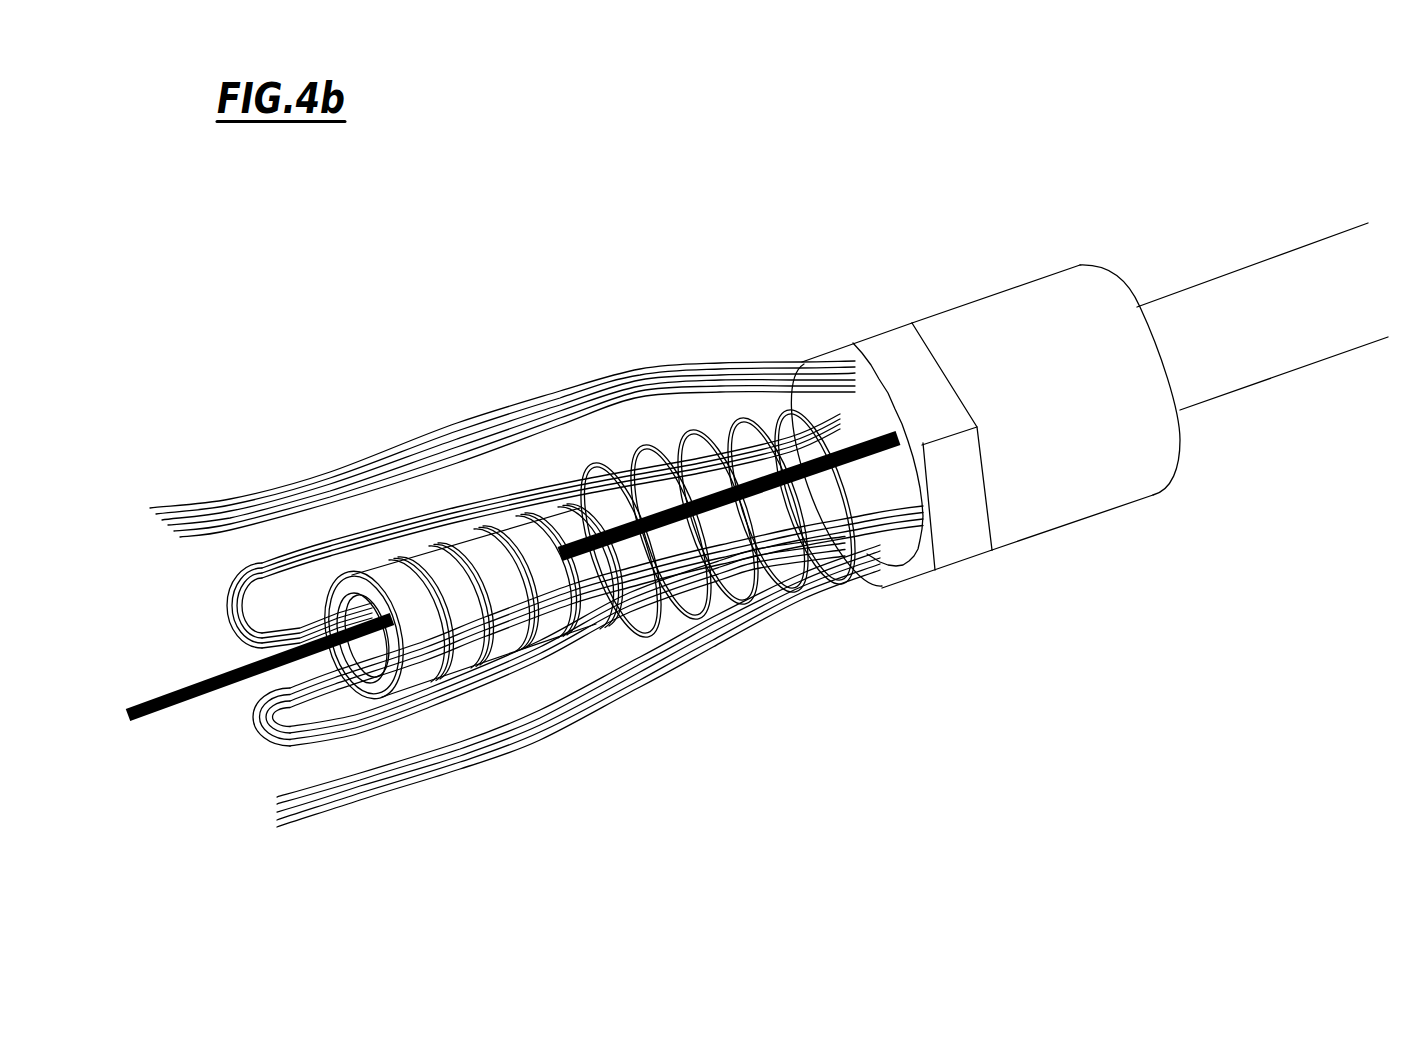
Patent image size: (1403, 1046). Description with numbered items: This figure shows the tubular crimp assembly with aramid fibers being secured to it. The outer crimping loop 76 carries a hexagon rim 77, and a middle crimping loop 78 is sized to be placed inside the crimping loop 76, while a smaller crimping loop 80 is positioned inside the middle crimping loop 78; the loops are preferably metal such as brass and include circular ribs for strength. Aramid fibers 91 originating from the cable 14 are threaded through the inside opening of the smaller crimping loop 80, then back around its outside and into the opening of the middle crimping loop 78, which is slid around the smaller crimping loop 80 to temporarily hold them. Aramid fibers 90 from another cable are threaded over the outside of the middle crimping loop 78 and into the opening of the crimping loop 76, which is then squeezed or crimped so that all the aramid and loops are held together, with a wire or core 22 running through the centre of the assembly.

The cable 14 is at (1192, 307).
The guide wire 22 is at (160, 725).
The crimping loop 76 is at (967, 337).
The hexagon rim 77 is at (887, 357).
The middle crimping loop 78 is at (735, 445).
The smaller crimping loop 80 is at (393, 583).
The aramid fibers 90 is at (493, 405).
The aramid fibers 91 is at (240, 570).